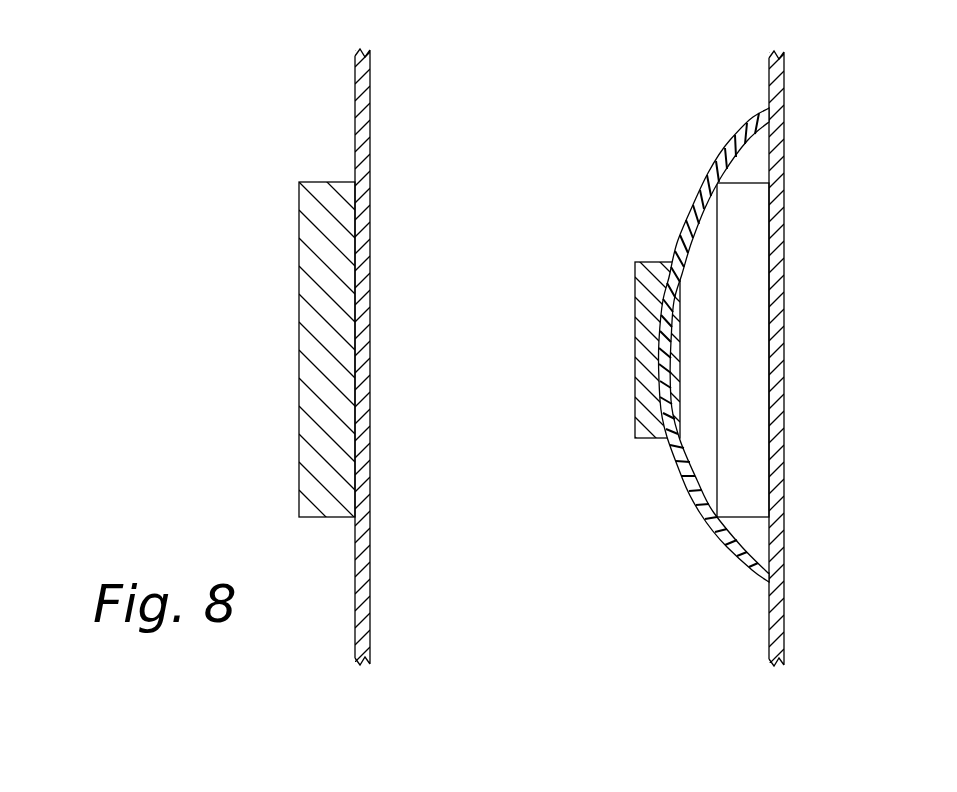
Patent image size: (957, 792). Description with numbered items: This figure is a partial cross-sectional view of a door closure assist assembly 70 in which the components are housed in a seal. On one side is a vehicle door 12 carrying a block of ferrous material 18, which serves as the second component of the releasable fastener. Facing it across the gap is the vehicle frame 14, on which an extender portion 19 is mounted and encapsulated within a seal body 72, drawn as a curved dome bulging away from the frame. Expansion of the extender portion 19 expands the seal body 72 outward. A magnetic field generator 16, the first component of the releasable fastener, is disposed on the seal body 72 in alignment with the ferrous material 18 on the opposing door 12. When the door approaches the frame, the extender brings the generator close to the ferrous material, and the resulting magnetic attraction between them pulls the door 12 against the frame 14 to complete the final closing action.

The door closure assist assembly 70 is at (218, 121).
The vehicle door 12 is at (370, 131).
The ferrous material 18 is at (299, 279).
The vehicle frame 14 is at (786, 278).
The extender portion 19 is at (717, 469).
The magnetic field generator 16 is at (635, 319).
The seal body 72 is at (698, 194).